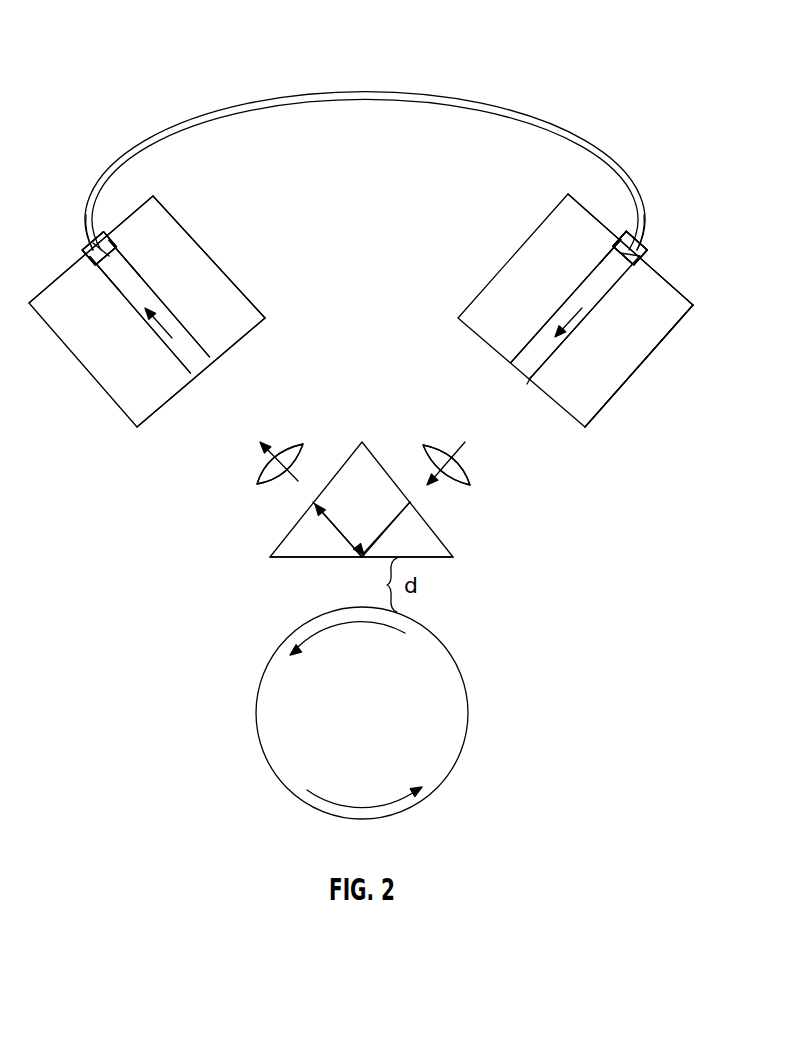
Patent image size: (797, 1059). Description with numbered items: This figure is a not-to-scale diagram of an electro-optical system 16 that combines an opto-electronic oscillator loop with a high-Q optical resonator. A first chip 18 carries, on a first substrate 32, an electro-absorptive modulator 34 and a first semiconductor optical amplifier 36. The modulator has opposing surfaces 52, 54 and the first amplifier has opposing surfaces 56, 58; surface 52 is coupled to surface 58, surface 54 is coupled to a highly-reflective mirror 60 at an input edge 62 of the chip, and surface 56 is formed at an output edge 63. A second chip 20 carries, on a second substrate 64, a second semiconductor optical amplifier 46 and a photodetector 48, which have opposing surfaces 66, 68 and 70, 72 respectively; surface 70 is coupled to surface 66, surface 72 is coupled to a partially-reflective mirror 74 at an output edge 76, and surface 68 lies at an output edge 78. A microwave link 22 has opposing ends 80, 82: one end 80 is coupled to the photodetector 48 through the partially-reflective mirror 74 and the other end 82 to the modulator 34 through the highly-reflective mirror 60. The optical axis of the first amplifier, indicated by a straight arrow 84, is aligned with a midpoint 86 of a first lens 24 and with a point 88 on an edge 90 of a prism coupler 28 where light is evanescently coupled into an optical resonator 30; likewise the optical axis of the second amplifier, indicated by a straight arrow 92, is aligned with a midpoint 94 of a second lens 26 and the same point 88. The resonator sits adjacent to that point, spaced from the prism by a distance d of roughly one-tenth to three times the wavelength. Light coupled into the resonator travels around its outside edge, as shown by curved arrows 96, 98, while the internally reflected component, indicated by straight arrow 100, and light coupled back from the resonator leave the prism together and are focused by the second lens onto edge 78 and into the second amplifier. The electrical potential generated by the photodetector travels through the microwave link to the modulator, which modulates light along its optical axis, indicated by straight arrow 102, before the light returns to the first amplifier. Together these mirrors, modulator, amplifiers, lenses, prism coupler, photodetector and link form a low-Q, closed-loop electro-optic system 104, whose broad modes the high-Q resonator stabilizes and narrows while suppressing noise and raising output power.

The system 16 is at (112, 44).
The first chip 18 is at (637, 371).
The second chip 20 is at (218, 266).
The microwave link 22 is at (373, 91).
The first lens 24 is at (453, 488).
The second lens 26 is at (273, 488).
The prism coupler 28 is at (444, 543).
The optical resonator 30 is at (470, 716).
The first substrate 32 is at (676, 313).
The electro-absorptive modulator 34 is at (641, 256).
The first semiconductor optical amplifier 36 is at (530, 380).
The second semiconductor optical amplifier 46 is at (202, 367).
The photodetector 48 is at (98, 266).
The surface of the EAM 52 is at (608, 258).
The opposing surface of the EAM 54 is at (622, 247).
The opposing surface of the first SOA 56 is at (509, 378).
The surface of the first SOA 58 is at (604, 265).
The highly-reflective mirror 60 is at (638, 250).
The input edge of the first chip 62 is at (691, 298).
The output edge of the first chip 63 is at (583, 426).
The second substrate 64 is at (242, 308).
The surface of the second SOA 66 is at (104, 283).
The opposing surface of the second SOA 68 is at (184, 371).
The surface of the photodetector 70 is at (126, 262).
The opposing surface of the photodetector 72 is at (117, 257).
The partially-reflective mirror 74 is at (85, 253).
The output edge of the second chip 76 is at (138, 208).
The output edge of the second chip 78 is at (253, 330).
The end of the microwave link 80 is at (87, 245).
The end of the microwave link 82 is at (641, 246).
The straight arrow 84 is at (583, 326).
The midpoint of the first lens 86 is at (423, 446).
The point at the edge of the prism coupler 88 is at (362, 559).
The edge of the prism coupler 90 is at (440, 560).
The straight arrow 92 is at (153, 327).
The midpoint of the second lens 94 is at (303, 445).
The curved arrow 96 is at (317, 630).
The curved arrow 98 is at (353, 808).
The straight arrow 100 is at (329, 519).
The straight arrow 102 is at (620, 268).
The low-Q closed-loop electro-optic system 104 is at (134, 590).